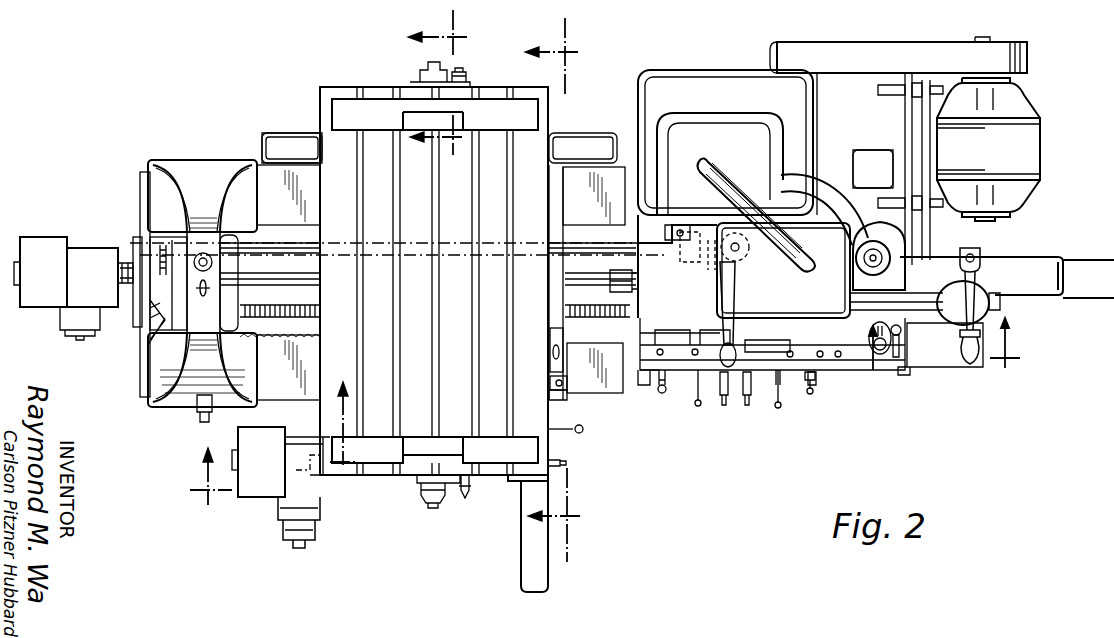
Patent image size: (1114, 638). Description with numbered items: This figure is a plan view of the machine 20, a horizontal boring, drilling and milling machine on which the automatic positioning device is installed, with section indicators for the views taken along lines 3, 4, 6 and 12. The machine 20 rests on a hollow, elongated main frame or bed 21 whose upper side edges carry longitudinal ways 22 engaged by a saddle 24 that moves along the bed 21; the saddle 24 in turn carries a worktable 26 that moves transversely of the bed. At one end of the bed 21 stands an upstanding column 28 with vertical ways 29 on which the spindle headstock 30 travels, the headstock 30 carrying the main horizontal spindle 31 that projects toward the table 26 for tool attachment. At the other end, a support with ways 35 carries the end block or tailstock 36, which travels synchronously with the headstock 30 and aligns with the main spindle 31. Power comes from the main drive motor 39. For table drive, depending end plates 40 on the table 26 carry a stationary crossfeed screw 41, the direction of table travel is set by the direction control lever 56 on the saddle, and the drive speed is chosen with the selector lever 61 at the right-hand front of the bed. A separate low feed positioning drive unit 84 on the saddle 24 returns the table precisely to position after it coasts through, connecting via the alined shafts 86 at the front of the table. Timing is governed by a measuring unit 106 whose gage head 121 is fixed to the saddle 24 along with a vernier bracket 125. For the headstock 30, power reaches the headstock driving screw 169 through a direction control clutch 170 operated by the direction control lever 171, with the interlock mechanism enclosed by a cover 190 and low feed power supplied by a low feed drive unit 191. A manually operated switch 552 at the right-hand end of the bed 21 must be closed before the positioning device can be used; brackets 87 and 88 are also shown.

The machine 20 is at (682, 419).
The main frame or bed 21 is at (644, 380).
The longitudinal guides or ways 22 is at (263, 168).
The saddle 24 is at (563, 182).
The worktable 26 is at (324, 92).
The upstanding column 28 is at (720, 80).
The vertical guides or ways 29 is at (666, 243).
The spindle headstock 30 is at (826, 310).
The main horizontal spindle 31 is at (614, 277).
The guides or ways 35 is at (224, 244).
The end block or tailstock 36 is at (237, 272).
The main drive motor 39 is at (1030, 146).
The depending end plates 40 is at (420, 77).
The stationary crossfeed screw 41 is at (428, 505).
The direction control lever 56 is at (581, 432).
The selector lever 61 is at (797, 384).
The low feed positioning drive unit 84 is at (258, 505).
The alined shafts 86 is at (565, 463).
The bracket 87 is at (322, 478).
The knob 88 is at (286, 537).
The measuring unit 106 is at (587, 399).
The gage head 121 is at (547, 332).
The vernier bracket 125 is at (552, 384).
The headstock driving screw 169 is at (738, 250).
The direction control clutch 170 is at (691, 278).
The direction control lever 171 is at (779, 405).
The cover 190 is at (965, 360).
The low feed drive unit 191 is at (85, 234).
The manually operated switch 552 is at (910, 383).
The section line 3- 3 is at (561, 290).
The section line 4- 4 is at (447, 84).
The section line 6- 6 is at (270, 438).
The section line 12- 12 is at (950, 357).